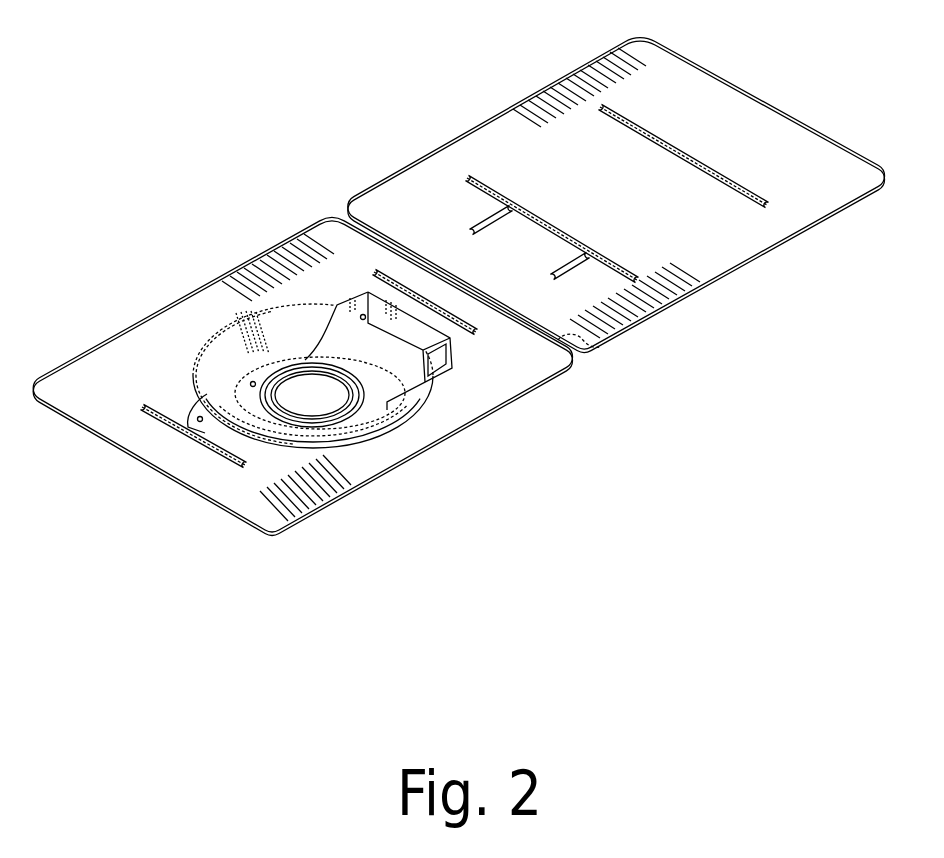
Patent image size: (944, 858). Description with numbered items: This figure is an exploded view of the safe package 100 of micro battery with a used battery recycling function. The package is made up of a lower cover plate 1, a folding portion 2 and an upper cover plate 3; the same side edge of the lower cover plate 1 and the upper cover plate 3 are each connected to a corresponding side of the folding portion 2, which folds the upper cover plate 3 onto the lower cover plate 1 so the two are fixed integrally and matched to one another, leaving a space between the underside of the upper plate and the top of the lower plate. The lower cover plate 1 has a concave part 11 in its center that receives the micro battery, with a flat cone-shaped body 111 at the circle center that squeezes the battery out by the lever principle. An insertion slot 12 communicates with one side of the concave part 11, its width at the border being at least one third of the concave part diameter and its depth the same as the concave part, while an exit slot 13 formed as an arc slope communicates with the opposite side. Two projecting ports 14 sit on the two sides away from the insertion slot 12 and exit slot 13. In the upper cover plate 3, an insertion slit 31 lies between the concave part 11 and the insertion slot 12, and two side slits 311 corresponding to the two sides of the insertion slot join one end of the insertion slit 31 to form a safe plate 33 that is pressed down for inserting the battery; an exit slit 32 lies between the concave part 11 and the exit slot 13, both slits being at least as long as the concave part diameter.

The safe package of micro battery 100 is at (188, 230).
The lower cover plate 1 is at (498, 401).
The folding portion 2 is at (588, 348).
The upper cover plate 3 is at (730, 253).
The concave part 11 is at (253, 382).
The flat cone-shaped body 111 is at (342, 410).
The insertion slot 12 is at (367, 291).
The exit slot 13 is at (200, 417).
The projecting ports 14 is at (377, 272).
The insertion slit 31 is at (495, 196).
The side slits 311 is at (480, 223).
The exit slit 32 is at (680, 153).
The safe plate 33 is at (540, 230).